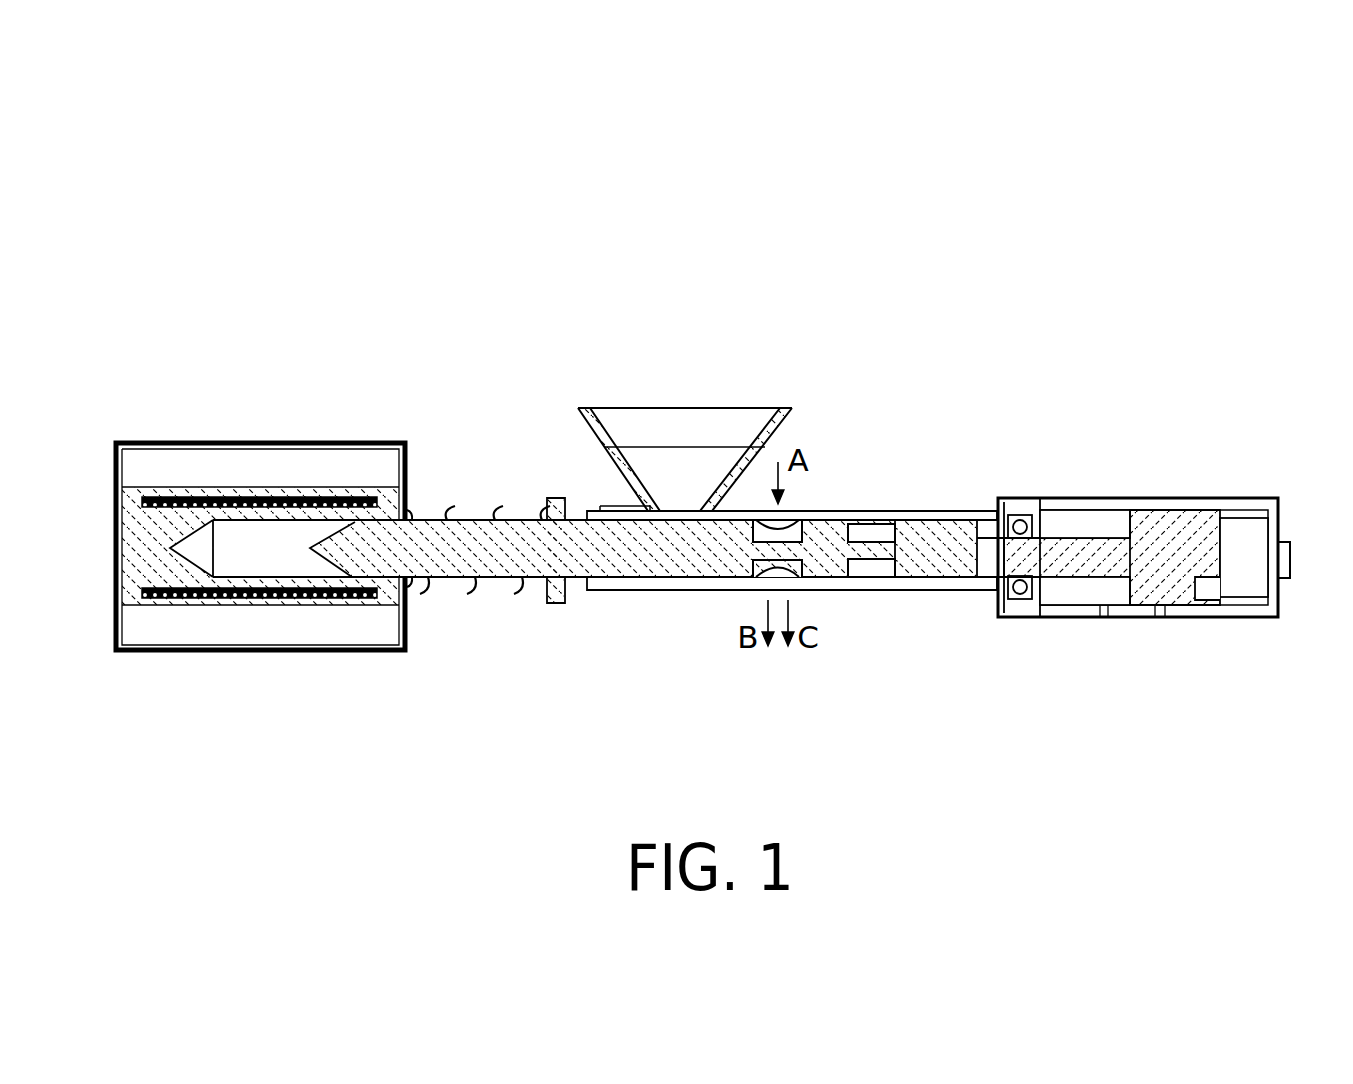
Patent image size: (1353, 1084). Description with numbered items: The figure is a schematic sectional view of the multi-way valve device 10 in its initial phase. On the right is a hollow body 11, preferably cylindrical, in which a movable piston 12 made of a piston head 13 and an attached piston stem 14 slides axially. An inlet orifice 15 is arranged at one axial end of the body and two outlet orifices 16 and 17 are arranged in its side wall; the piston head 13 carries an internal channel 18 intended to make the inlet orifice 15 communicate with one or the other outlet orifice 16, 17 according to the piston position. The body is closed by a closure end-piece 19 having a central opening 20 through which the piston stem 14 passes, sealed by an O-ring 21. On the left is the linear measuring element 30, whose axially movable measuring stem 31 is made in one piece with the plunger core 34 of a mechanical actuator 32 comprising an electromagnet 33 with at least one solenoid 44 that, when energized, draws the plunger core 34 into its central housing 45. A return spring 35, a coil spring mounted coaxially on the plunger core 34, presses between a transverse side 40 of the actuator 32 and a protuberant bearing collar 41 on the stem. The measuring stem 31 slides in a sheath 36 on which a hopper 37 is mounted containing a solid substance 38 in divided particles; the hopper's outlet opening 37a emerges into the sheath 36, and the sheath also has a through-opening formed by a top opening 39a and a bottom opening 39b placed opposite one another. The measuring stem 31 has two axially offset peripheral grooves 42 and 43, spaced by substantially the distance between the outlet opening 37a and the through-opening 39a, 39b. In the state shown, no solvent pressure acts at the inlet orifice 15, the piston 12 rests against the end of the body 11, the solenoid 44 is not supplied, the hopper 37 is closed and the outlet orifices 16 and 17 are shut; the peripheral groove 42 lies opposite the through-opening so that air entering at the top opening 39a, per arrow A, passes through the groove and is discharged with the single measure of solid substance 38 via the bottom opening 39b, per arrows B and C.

The multi-way valve device 10 is at (805, 312).
The hollow body 11 is at (1133, 540).
The movable piston 12 is at (1195, 540).
The piston head 13 is at (1165, 545).
The piston stem 14 is at (1075, 553).
The inlet orifice 15 is at (1298, 540).
The outlet orifice 16 is at (1163, 614).
The outlet orifice 17 is at (1108, 614).
The internal channel 18 is at (1210, 607).
The closure end-piece 19 is at (1020, 513).
The central opening 20 is at (980, 512).
The O-ring 21 is at (1018, 600).
The linear measuring element 30 is at (478, 512).
The measuring stem 31 is at (612, 545).
The mechanical actuator 32 is at (265, 445).
The electromagnet 33 is at (320, 603).
The plunger core 34 is at (447, 565).
The return spring 35 is at (520, 590).
The sheath 36 is at (692, 592).
The hopper 37 is at (780, 410).
The outlet opening 37a is at (683, 520).
The solid substance 38 is at (670, 472).
The top opening 39a is at (790, 512).
The bottom opening 39b is at (752, 593).
The transverse side 40 is at (410, 510).
The protuberant bearing collar 41 is at (550, 500).
The peripheral groove 42 is at (800, 593).
The peripheral groove 43 is at (885, 600).
The solenoid 44 is at (180, 600).
The central housing 45 is at (280, 555).